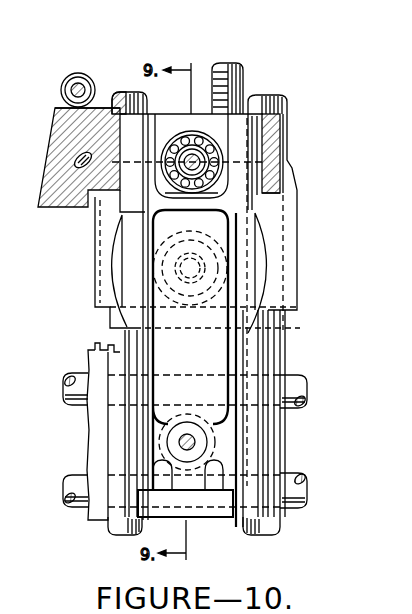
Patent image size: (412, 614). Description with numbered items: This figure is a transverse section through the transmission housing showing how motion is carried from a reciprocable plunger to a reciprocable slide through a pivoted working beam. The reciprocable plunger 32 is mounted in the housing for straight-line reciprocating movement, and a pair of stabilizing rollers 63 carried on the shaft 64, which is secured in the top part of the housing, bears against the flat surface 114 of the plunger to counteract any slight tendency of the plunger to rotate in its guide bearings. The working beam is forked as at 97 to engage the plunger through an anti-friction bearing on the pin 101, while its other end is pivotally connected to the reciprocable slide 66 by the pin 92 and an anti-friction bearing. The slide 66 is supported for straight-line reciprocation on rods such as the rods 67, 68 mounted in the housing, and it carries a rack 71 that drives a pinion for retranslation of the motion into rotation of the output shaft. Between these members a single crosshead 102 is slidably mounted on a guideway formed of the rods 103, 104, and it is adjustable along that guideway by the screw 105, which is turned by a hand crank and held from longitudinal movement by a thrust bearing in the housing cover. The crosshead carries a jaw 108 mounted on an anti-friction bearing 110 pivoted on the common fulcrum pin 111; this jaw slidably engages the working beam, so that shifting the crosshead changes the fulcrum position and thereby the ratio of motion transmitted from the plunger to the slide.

The reciprocable plunger 32 is at (66, 136).
The flat surface 114 is at (67, 108).
The stabilizing rollers 63 is at (66, 79).
The shaft 64 is at (83, 81).
The forked end of working beam 97 is at (167, 126).
The pin 101 is at (193, 160).
The screw 105 is at (223, 80).
The crosshead 102 is at (287, 195).
The jaw 108 is at (258, 242).
The anti-friction bearing 110 is at (183, 233).
The fulcrum pin 111 is at (189, 268).
The rod 103 is at (123, 327).
The rod 104 is at (258, 345).
The reciprocable slide 66 is at (98, 442).
The rack 71 is at (100, 345).
The rod 67 is at (296, 384).
The rod 68 is at (296, 488).
The pin 92 is at (195, 443).